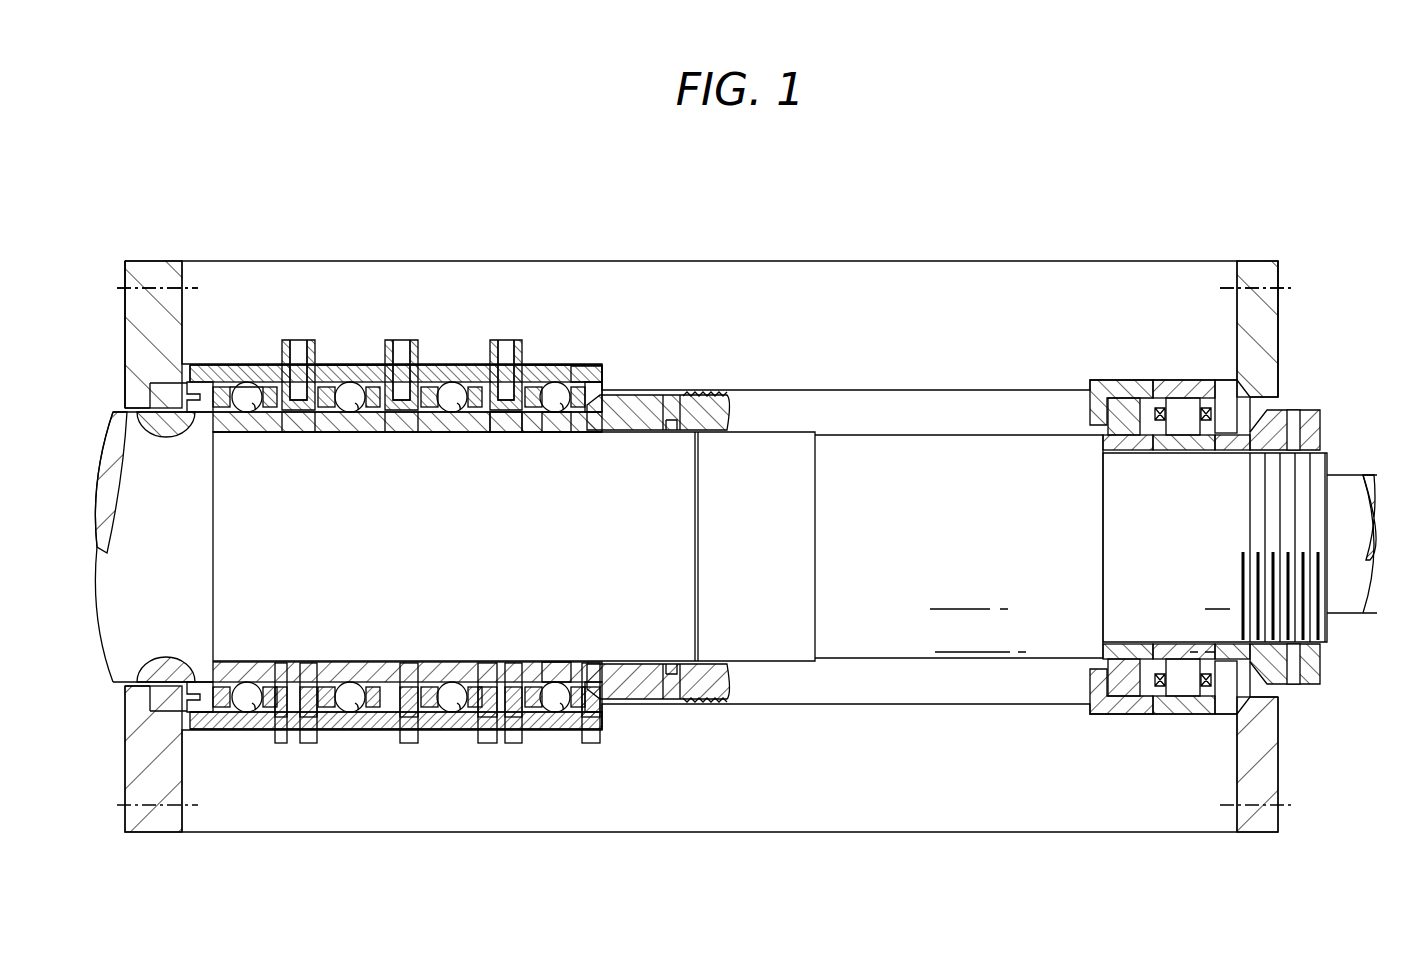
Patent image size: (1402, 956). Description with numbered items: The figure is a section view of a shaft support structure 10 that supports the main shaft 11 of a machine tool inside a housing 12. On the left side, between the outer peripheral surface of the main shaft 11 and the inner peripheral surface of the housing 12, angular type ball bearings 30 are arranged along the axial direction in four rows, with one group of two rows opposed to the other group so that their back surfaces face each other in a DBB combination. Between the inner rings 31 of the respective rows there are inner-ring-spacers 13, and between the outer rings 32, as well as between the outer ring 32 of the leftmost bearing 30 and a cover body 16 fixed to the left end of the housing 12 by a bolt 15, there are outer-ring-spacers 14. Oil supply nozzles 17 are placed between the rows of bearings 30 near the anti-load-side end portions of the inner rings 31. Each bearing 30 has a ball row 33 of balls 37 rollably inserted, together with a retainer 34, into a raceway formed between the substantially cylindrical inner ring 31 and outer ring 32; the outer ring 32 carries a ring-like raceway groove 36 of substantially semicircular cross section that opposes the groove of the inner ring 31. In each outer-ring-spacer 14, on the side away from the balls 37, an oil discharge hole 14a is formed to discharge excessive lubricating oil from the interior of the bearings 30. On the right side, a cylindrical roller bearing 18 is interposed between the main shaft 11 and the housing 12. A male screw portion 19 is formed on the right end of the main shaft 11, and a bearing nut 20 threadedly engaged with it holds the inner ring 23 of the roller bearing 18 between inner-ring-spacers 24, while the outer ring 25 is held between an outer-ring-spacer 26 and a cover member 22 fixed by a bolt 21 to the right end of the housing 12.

The shaft support structure 10 is at (826, 234).
The main shaft 11 is at (742, 542).
The housing 12 is at (936, 268).
The inner-ring-spacer 13 is at (400, 662).
The outer-ring-spacer 14 is at (222, 365).
The oil discharge hole 14a is at (597, 720).
The bolt 15 is at (124, 258).
The cover body 16 is at (132, 336).
The oil supply nozzle 17 is at (402, 355).
The cylindrical roller bearing 18 is at (1192, 384).
The male screw portion 19 is at (1292, 505).
The bearing nut 20 is at (1318, 416).
The bolt 21 is at (1288, 286).
The cover member 22 is at (1278, 330).
The inner ring 23 is at (1178, 451).
The inner-ring-spacer 24 is at (1127, 451).
The outer ring 25 is at (1165, 380).
The outer-ring-spacer 26 is at (1117, 381).
The angular type ball bearing 30 is at (360, 378).
The inner ring 31 is at (518, 434).
The outer ring 32 is at (328, 378).
The ball row 33 is at (350, 422).
The retainer 34 is at (567, 365).
The raceway groove 36 is at (253, 384).
The ball 37 is at (545, 424).